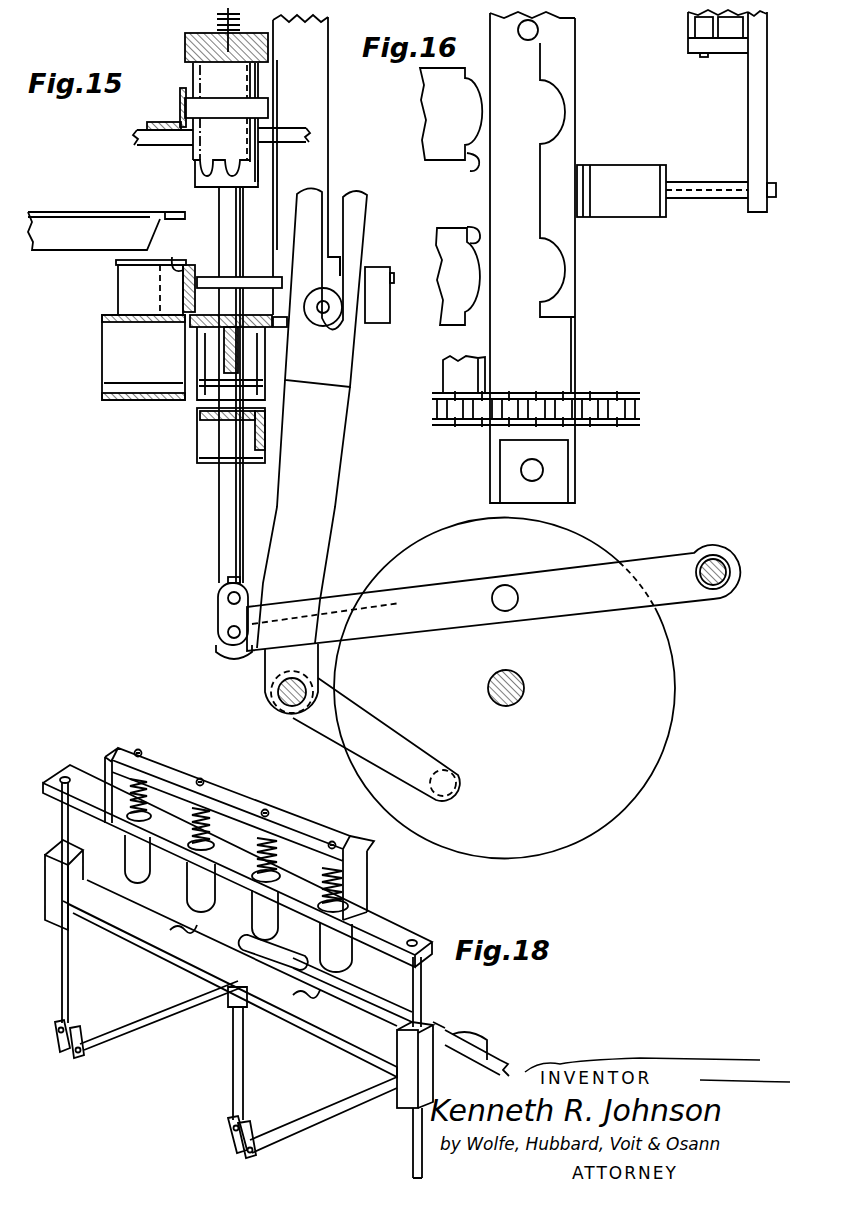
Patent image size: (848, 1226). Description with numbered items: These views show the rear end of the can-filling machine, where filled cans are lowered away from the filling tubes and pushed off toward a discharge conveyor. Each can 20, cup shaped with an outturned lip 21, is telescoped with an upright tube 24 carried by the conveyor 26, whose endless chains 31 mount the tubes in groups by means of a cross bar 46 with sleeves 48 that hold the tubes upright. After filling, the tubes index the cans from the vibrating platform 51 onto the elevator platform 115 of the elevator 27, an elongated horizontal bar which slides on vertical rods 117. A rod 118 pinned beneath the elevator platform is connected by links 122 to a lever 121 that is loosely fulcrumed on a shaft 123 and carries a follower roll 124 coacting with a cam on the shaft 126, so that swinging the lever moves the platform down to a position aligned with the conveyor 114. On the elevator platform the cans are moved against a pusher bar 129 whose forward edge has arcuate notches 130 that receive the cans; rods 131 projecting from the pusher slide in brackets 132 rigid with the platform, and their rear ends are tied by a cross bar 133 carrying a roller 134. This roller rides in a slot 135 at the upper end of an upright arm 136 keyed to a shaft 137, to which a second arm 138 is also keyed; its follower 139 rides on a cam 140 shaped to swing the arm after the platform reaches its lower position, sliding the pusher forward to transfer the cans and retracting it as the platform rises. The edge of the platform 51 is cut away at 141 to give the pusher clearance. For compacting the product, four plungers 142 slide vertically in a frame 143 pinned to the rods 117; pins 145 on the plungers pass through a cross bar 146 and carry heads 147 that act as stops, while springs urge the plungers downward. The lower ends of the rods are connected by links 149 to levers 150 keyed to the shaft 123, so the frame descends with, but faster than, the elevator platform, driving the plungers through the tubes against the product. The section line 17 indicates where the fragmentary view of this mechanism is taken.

In FIG. 15, the section line 17- 17 is at (258, 40).
In FIG. 15, the can 20 is at (124, 289).
In FIG. 15, the outturned lip 21 is at (116, 263).
In FIG. 15, the tube 24 is at (258, 80).
In FIG. 15, the conveyor 26 is at (154, 148).
In FIG. 16, the conveyor 26 is at (603, 428).
In FIG. 15, the elevator 27 is at (184, 412).
In FIG. 16, the elevator 27 is at (638, 347).
In FIG. 15, the endless chain 31 is at (135, 142).
In FIG. 16, the endless chain 31 is at (641, 407).
In FIG. 15, the cross bar 46 is at (168, 124).
In FIG. 16, the cross bar 46 is at (468, 360).
In FIG. 15, the sleeve 48 is at (268, 105).
In FIG. 15, the platform 51 is at (51, 206).
In FIG. 16, the platform 51 is at (426, 143).
In FIG. 15, the conveyor 114 is at (106, 317).
In FIG. 15, the elevator platform 115 is at (254, 320).
In FIG. 16, the elevator platform 115 is at (566, 345).
In FIG. 18, the elevator platform 115 is at (143, 930).
In FIG. 18, the vertical rod 117 is at (61, 825).
In FIG. 15, the rod 118 is at (222, 549).
In FIG. 16, the rod 118 is at (540, 476).
In FIG. 15, the lever 121 is at (607, 607).
In FIG. 18, the lever 121 is at (358, 1110).
In FIG. 15, the link 122 is at (218, 605).
In FIG. 18, the link 122 is at (233, 1141).
In FIG. 15, the shaft 123 is at (728, 572).
In FIG. 18, the shaft 123 is at (358, 995).
In FIG. 15, the follower roll 124 is at (517, 598).
In FIG. 15, the shaft 126 is at (515, 702).
In FIG. 15, the pusher bar 129 is at (191, 265).
In FIG. 16, the pusher bar 129 is at (576, 139).
In FIG. 15, the arcuate notch 130 is at (170, 252).
In FIG. 16, the arcuate notch 130 is at (561, 113).
In FIG. 15, the rod 131 is at (252, 277).
In FIG. 16, the rod 131 is at (712, 188).
In FIG. 15, the bracket 132 is at (290, 260).
In FIG. 16, the bracket 132 is at (630, 172).
In FIG. 15, the cross bar 133 is at (390, 323).
In FIG. 16, the cross bar 133 is at (752, 146).
In FIG. 15, the roller 134 is at (323, 322).
In FIG. 16, the roller 134 is at (688, 45).
In FIG. 15, the slot 135 is at (343, 197).
In FIG. 15, the arm 136 is at (337, 425).
In FIG. 15, the shaft 137 is at (290, 706).
In FIG. 15, the second arm 138 is at (343, 745).
In FIG. 15, the follower 139 is at (458, 786).
In FIG. 15, the cam 140 is at (562, 843).
In FIG. 16, the cut-away 141 is at (464, 198).
In FIG. 15, the plunger 142 is at (203, 173).
In FIG. 18, the plunger 142 is at (192, 873).
In FIG. 15, the frame 143 is at (268, 52).
In FIG. 18, the frame 143 is at (389, 928).
In FIG. 18, the pin 145 is at (190, 805).
In FIG. 18, the cross bar 146 is at (130, 744).
In FIG. 18, the head 147 is at (142, 751).
In FIG. 18, the link 149 is at (72, 1050).
In FIG. 18, the lever 150 is at (146, 1028).